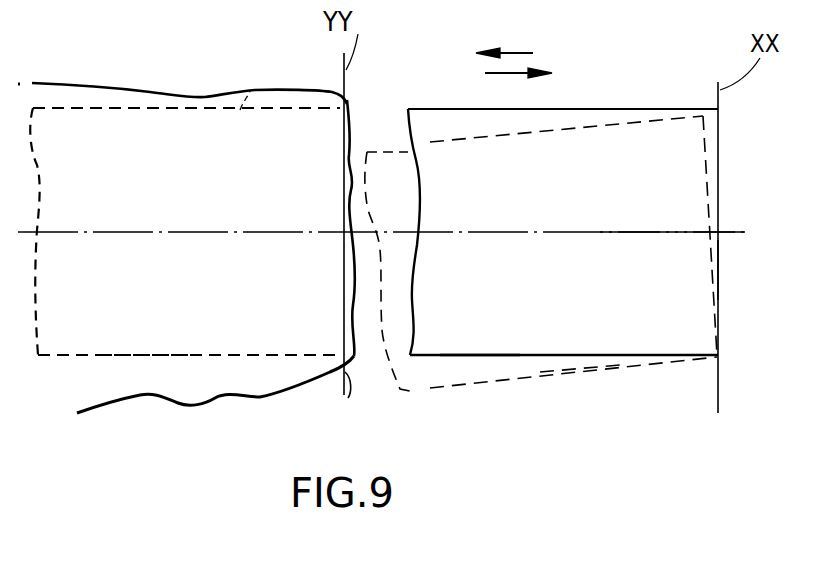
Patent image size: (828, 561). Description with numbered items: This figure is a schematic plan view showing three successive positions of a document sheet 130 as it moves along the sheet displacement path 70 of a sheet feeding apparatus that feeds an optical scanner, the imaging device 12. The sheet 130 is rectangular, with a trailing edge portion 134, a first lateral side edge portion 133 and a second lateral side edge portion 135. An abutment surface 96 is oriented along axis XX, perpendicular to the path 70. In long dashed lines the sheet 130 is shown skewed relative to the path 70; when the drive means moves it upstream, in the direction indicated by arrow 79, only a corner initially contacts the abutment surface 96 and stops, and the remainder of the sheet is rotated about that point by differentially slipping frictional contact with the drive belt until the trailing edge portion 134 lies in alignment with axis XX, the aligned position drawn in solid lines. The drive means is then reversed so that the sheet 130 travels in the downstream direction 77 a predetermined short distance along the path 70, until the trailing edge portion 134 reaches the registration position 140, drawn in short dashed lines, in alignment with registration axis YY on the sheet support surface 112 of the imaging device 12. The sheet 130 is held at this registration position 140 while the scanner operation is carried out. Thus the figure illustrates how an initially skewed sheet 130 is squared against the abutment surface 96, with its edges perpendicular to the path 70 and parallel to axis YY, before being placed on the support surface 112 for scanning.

The imaging device 12 is at (256, 402).
The sheet displacement path 70 is at (735, 231).
The downstream direction 77 is at (523, 48).
The direction of movement 79 is at (515, 75).
The abutment surface 96 is at (720, 265).
The sheet support surface 112 is at (292, 373).
The sheet 130 is at (578, 109).
The first lateral side edge portion 133 is at (250, 93).
The trailing edge portion 134 is at (755, 118).
The second lateral side edge portion 135 is at (143, 355).
The registration position 140 is at (353, 165).